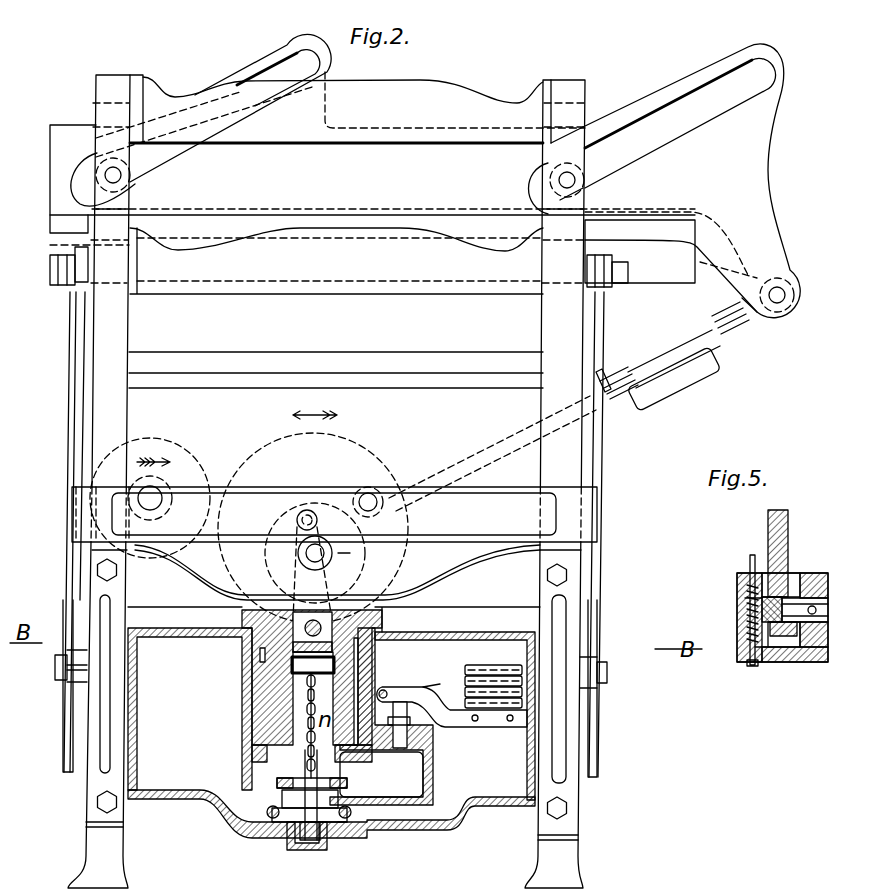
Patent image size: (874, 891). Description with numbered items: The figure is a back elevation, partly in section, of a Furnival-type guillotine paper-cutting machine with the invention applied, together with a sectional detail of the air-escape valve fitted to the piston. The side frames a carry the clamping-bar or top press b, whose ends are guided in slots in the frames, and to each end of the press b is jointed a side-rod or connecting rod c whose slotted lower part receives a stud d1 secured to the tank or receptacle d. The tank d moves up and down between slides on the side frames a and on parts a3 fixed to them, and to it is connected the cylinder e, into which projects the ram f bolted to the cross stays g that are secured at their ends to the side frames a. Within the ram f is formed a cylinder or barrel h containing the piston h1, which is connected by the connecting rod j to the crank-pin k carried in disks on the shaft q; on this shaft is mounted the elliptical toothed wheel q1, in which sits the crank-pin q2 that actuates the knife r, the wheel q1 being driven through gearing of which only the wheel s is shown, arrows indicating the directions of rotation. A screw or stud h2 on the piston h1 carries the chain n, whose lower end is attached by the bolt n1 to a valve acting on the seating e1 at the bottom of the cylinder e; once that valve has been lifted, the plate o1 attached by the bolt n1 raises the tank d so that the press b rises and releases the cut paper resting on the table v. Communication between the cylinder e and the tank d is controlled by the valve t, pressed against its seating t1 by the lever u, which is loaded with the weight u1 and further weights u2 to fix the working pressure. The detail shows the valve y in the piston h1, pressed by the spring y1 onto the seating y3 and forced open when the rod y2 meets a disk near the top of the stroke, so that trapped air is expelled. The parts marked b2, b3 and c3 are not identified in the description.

In FIG. 2, the side-frames a is at (326, 481).
In FIG. 2, the parts secured to the side frames a3 is at (330, 688).
In FIG. 2, the clamping-bar or top press b is at (336, 261).
In FIG. 2, the clamp bolt b2 is at (272, 818).
In FIG. 2, the clamp plate b3 is at (272, 812).
In FIG. 2, the side-rod or connecting rod c is at (327, 534).
In FIG. 2, the coupling nut c3 is at (310, 803).
In FIG. 2, the tank or receptacle d is at (331, 733).
In FIG. 2, the stud d1 is at (55, 667).
In FIG. 2, the cylinder e is at (393, 663).
In FIG. 2, the seating e1 is at (270, 788).
In FIG. 2, the ram f is at (308, 767).
In FIG. 2, the cross stays g is at (334, 522).
In FIG. 2, the cylinder or barrel h is at (312, 670).
In FIG. 2, the piston h1 is at (325, 566).
In FIG. 5, the piston h1 is at (806, 662).
In FIG. 2, the screw or stud h2 is at (314, 683).
In FIG. 2, the connecting rod j is at (303, 573).
In FIG. 5, the connecting rod j is at (788, 530).
In FIG. 2, the crank-pin k is at (297, 520).
In FIG. 2, the chain n is at (306, 553).
In FIG. 2, the bolt n1 is at (309, 866).
In FIG. 2, the plate o1 is at (342, 820).
In FIG. 2, the shaft q is at (352, 552).
In FIG. 2, the elliptical toothed wheel q1 is at (313, 517).
In FIG. 2, the crank-pin q2 is at (373, 509).
In FIG. 2, the knife r is at (55, 262).
In FIG. 2, the wheel s is at (150, 497).
In FIG. 2, the valve t is at (452, 708).
In FIG. 2, the seating t1 is at (389, 725).
In FIG. 2, the lever u is at (425, 689).
In FIG. 2, the weight u1 is at (505, 727).
In FIG. 2, the additional weights u2 is at (476, 677).
In FIG. 2, the table v is at (336, 370).
In FIG. 5, the valve y is at (751, 666).
In FIG. 5, the spring y1 is at (742, 633).
In FIG. 5, the rod y2 is at (750, 566).
In FIG. 5, the seating y3 is at (764, 663).